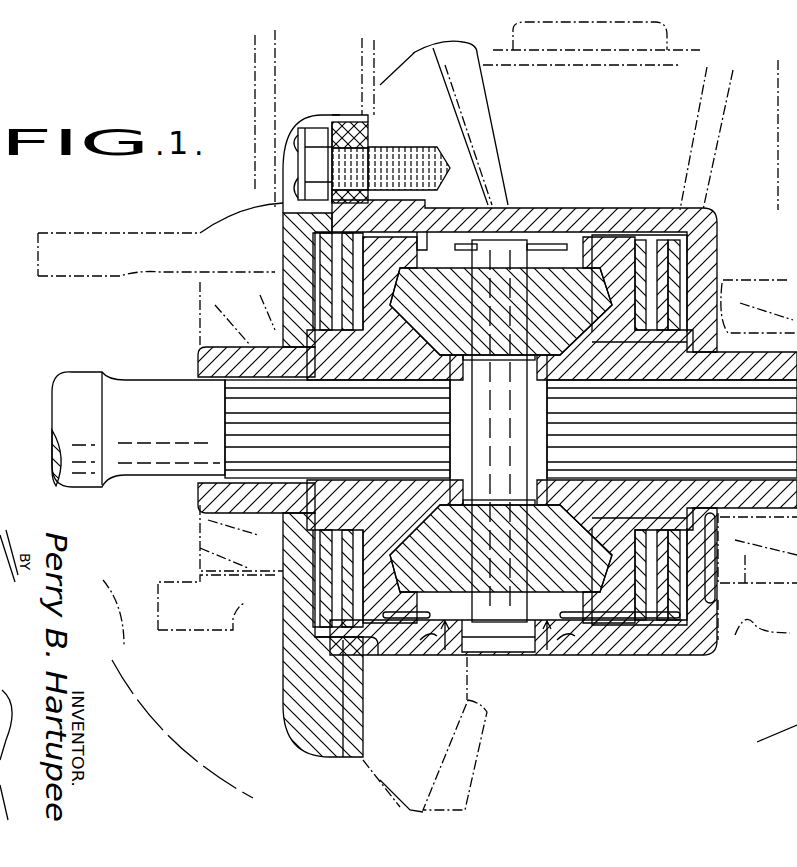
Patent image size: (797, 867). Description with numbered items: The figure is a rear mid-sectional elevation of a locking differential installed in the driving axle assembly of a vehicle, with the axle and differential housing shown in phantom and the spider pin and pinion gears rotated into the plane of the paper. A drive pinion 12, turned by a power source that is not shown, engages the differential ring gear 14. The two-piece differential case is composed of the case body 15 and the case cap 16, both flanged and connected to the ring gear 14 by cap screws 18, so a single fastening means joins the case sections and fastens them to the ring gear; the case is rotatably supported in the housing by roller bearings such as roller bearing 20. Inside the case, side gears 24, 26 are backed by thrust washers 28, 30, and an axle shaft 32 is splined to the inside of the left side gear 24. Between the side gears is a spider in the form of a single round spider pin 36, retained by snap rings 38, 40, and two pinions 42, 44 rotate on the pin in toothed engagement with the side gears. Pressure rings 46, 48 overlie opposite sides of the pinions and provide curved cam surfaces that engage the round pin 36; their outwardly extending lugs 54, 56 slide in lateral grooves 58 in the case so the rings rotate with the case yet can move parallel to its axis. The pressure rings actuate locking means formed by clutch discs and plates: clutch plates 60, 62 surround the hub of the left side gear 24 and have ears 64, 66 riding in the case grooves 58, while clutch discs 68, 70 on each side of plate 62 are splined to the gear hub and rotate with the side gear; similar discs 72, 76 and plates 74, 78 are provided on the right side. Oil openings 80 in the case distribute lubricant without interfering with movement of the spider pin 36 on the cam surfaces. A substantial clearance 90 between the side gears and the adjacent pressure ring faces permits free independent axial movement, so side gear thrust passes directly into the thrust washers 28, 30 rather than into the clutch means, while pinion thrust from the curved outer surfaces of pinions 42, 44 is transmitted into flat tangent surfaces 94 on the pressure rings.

The drive pinion 12 is at (726, 63).
The differential ring gear 14 is at (412, 70).
The case body 15 is at (706, 218).
The case cap 16 is at (278, 250).
The cap screws 18 is at (305, 133).
The roller bearing 20 is at (190, 322).
The left side gear 24 is at (410, 367).
The side gear 26 is at (608, 369).
The thrust washer 28 is at (203, 341).
The thrust washer 30 is at (727, 330).
The axle shaft 32 is at (170, 426).
The spider pin 36 is at (500, 440).
The snap ring 38 is at (478, 362).
The snap ring 40 is at (505, 484).
The pinion 42 is at (542, 290).
The pinion 44 is at (545, 554).
The pressure ring 46 is at (452, 250).
The pressure ring 48 is at (573, 258).
The lug 54 is at (400, 195).
The lug 56 is at (620, 240).
The lateral grooves 58 is at (640, 235).
The clutch plate 60 is at (290, 613).
The clutch plate 62 is at (290, 627).
The ear 64 is at (317, 238).
The ear 66 is at (322, 215).
The clutch disc 68 is at (283, 545).
The clutch disc 70 is at (283, 580).
The clutch disc 72 is at (640, 612).
The clutch plate 74 is at (652, 612).
The clutch disc 76 is at (665, 612).
The clutch plate 78 is at (713, 598).
The oil openings 80 is at (520, 655).
The clearance 90 is at (613, 318).
The flat tangent surfaces 94 is at (443, 290).